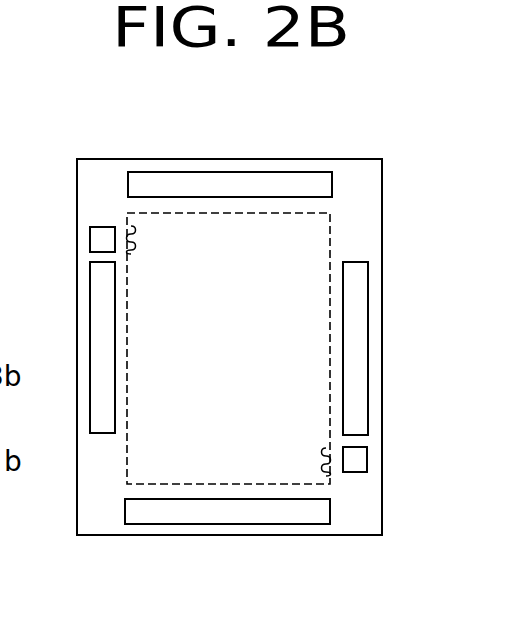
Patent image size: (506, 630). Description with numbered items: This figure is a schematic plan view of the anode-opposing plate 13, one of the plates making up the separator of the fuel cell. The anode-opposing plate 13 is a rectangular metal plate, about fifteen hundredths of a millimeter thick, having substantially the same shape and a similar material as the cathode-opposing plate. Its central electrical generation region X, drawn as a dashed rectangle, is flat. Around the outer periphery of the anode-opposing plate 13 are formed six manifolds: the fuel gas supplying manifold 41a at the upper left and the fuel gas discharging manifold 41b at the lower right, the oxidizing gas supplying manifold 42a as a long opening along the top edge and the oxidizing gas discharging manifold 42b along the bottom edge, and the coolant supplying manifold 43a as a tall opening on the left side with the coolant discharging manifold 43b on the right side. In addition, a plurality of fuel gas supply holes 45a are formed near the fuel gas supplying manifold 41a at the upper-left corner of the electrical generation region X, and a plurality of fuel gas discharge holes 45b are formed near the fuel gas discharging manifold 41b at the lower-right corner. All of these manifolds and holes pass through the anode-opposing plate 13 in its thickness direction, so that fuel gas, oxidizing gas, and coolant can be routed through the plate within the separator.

The anode-opposing plate 13 is at (105, 159).
The electrical generation region X is at (333, 245).
The fuel gas supplying manifold 41a is at (102, 242).
The fuel gas discharging manifold 41b is at (357, 458).
The oxidizing gas supplying manifold 42a is at (260, 190).
The oxidizing gas discharging manifold 42b is at (178, 515).
The coolant supplying manifold 43a is at (100, 313).
The coolant discharging manifold 43b is at (357, 352).
The fuel gas supply holes 45a is at (134, 227).
The fuel gas discharge holes 45b is at (325, 472).